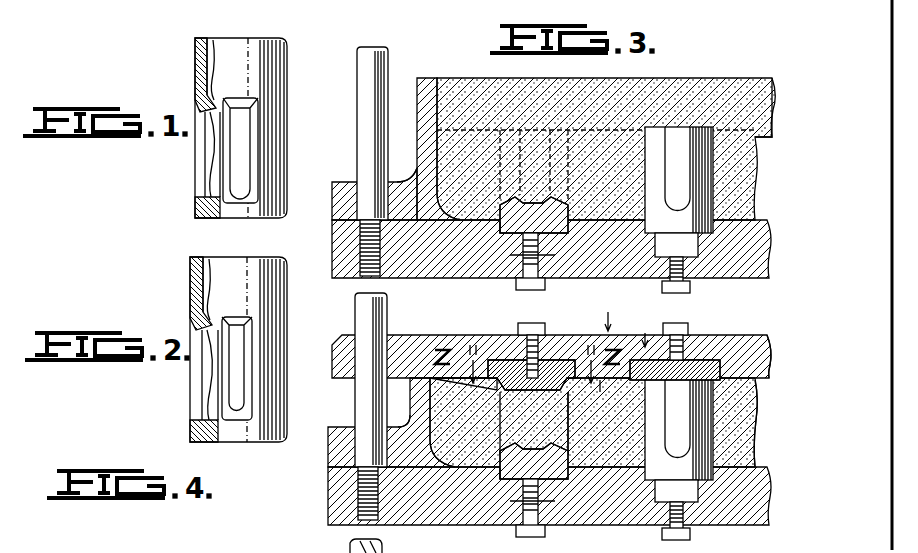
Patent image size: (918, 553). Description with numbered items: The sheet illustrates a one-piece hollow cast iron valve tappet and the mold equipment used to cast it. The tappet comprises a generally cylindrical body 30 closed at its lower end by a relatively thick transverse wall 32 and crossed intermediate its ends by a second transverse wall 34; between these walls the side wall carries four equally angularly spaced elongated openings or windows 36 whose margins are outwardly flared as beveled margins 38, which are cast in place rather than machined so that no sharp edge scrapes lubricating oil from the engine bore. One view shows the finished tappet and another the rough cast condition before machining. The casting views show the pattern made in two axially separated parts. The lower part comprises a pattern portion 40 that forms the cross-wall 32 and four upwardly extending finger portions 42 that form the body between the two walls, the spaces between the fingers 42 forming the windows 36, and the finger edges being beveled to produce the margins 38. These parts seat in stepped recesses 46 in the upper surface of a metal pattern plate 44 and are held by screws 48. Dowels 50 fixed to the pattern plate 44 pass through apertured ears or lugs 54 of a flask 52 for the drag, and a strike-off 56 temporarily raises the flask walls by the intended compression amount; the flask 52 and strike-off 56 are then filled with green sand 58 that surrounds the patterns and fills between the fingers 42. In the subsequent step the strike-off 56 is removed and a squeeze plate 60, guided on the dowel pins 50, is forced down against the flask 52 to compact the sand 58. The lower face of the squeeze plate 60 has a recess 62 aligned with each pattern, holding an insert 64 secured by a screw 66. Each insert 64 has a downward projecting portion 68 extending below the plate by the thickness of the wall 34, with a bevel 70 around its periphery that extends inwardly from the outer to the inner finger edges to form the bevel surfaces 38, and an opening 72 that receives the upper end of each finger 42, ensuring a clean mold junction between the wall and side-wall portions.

In FIG. 1, the cylindrical body 30 is at (268, 84).
In FIG. 2, the cylindrical body 30 is at (262, 298).
In FIG. 1, the transverse wall 32 is at (205, 218).
In FIG. 2, the transverse wall 32 is at (200, 442).
In FIG. 1, the second transverse wall 34 is at (206, 98).
In FIG. 2, the second transverse wall 34 is at (205, 324).
In FIG. 1, the openings or windows 36 is at (245, 126).
In FIG. 2, the openings or windows 36 is at (242, 352).
In FIG. 1, the beveled margins 38 is at (197, 168).
In FIG. 2, the beveled margins 38 is at (196, 374).
In FIG. 3, the pattern portion 40 is at (499, 228).
In FIG. 4, the pattern portion 40 is at (499, 474).
In FIG. 3, the finger portions 42 is at (492, 80).
In FIG. 4, the finger portions 42 is at (655, 416).
In FIG. 3, the pattern plate 44 is at (336, 248).
In FIG. 4, the pattern plate 44 is at (332, 504).
In FIG. 3, the stepped recesses 46 is at (565, 235).
In FIG. 4, the stepped recesses 46 is at (565, 482).
In FIG. 3, the screws 48 is at (524, 288).
In FIG. 4, the screws 48 is at (522, 536).
In FIG. 3, the dowels 50 is at (366, 78).
In FIG. 4, the dowels 50 is at (362, 300).
In FIG. 3, the flask 52 is at (417, 152).
In FIG. 4, the flask 52 is at (410, 392).
In FIG. 3, the apertured ears or lugs 54 is at (350, 182).
In FIG. 4, the apertured ears or lugs 54 is at (348, 428).
In FIG. 3, the strike-off 56 is at (420, 78).
In FIG. 3, the green sand 58 is at (757, 150).
In FIG. 4, the green sand 58 is at (757, 432).
In FIG. 4, the squeeze plate 60 is at (760, 340).
In FIG. 4, the recess 62 is at (498, 342).
In FIG. 4, the insert 64 is at (570, 360).
In FIG. 4, the screw 66 is at (532, 322).
In FIG. 4, the projecting portion 68 is at (463, 398).
In FIG. 4, the bevel 70 is at (577, 423).
In FIG. 4, the opening 72 is at (612, 396).